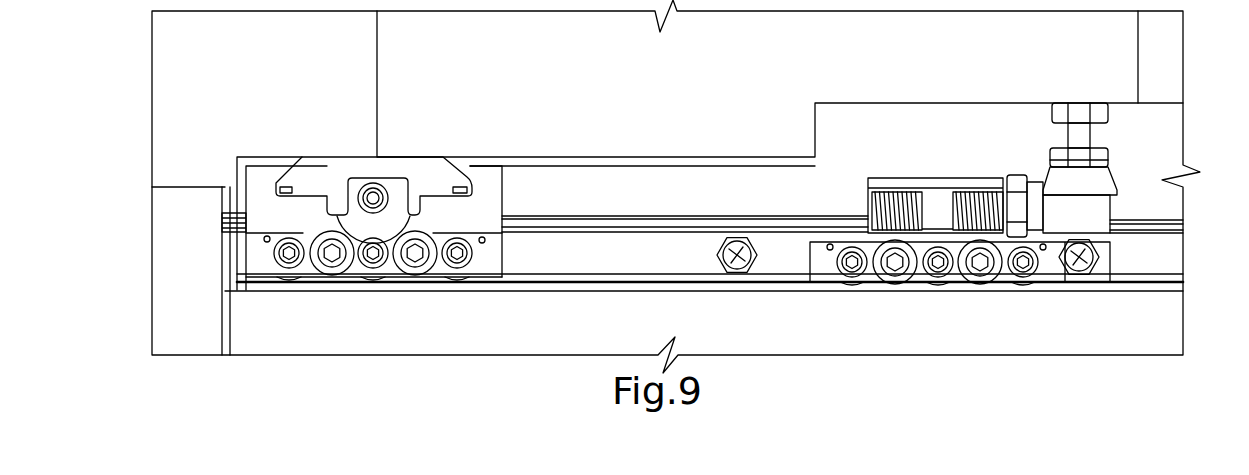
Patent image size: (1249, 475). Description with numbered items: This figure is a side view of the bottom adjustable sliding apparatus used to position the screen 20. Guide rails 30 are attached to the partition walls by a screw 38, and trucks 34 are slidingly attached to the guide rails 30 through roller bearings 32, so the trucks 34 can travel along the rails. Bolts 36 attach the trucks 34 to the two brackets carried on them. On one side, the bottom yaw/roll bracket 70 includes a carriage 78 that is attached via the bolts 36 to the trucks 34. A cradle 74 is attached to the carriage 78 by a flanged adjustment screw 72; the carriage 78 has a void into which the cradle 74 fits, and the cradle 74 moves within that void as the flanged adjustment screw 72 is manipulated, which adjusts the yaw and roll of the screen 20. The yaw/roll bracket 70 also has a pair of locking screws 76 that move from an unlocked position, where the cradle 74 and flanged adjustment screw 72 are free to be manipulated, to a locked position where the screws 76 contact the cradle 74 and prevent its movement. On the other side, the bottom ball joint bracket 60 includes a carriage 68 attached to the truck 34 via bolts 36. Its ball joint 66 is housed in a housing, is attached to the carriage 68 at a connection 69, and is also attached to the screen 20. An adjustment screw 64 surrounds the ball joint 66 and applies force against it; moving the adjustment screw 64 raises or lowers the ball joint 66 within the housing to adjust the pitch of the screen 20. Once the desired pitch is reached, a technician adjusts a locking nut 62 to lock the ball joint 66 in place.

The screen 20 is at (220, 102).
The guide rails 30 is at (700, 285).
The roller bearings 32 is at (287, 272).
The trucks 34 is at (253, 257).
The bolts 36 is at (332, 262).
The screw 38 is at (741, 262).
The bottom ball joint bracket 60 is at (972, 305).
The locking nut 62 is at (1037, 184).
The adjustment screw 64 is at (1032, 183).
The ball joint 66 is at (1097, 210).
The carriage 68 is at (1087, 114).
The connection 69 is at (1093, 236).
The bottom yaw/roll bracket 70 is at (384, 301).
The flanged adjustment screw 72 is at (358, 207).
The cradle 74 is at (327, 164).
The locking screws 76 is at (285, 188).
The carriage 78 is at (470, 193).